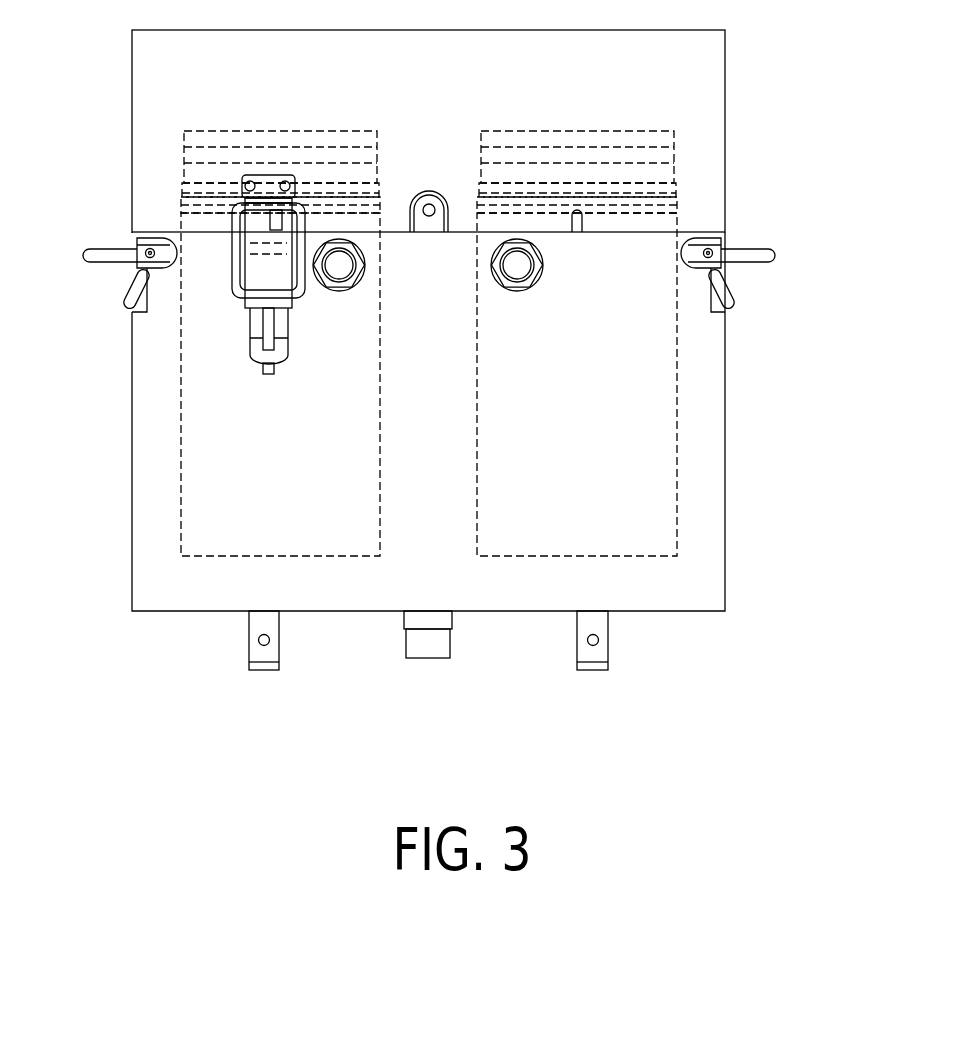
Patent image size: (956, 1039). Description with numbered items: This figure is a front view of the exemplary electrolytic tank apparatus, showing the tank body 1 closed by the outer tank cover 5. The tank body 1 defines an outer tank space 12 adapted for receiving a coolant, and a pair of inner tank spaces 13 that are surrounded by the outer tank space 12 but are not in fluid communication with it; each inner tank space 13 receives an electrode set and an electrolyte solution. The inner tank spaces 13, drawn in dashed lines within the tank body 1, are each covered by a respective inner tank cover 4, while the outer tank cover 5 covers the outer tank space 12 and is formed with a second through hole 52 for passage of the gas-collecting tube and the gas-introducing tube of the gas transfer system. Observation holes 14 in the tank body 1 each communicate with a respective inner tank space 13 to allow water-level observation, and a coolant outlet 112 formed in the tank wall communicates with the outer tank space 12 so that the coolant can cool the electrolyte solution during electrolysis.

The tank body 1 is at (463, 374).
The inner tank covers 4 is at (282, 132).
The outer tank cover 5 is at (725, 87).
The outer tank space 12 is at (727, 503).
The inner tank spaces 13 is at (679, 550).
The observation holes 14 is at (507, 268).
The second through hole 52 is at (432, 205).
The coolant outlet 112 is at (427, 660).